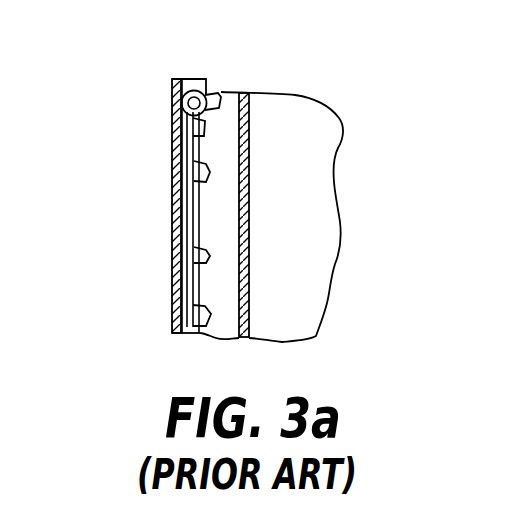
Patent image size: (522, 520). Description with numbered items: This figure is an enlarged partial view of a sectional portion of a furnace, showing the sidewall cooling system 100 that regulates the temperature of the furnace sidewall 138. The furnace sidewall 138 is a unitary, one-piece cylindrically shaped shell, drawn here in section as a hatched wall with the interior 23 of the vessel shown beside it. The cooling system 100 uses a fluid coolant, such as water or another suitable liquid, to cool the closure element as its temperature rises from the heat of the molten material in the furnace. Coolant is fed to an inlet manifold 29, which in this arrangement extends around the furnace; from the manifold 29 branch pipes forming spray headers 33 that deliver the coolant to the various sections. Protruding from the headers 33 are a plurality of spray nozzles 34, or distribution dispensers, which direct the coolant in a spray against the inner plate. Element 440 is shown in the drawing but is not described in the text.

The furnace sidewall 138 is at (229, 100).
The roof interior 23 is at (240, 300).
The spray header 33 is at (195, 200).
The spray nozzle 34 is at (197, 160).
The inlet manifold 29 is at (194, 103).
The pin 440 is at (217, 92).
The sidewall cooling system 100 is at (158, 256).